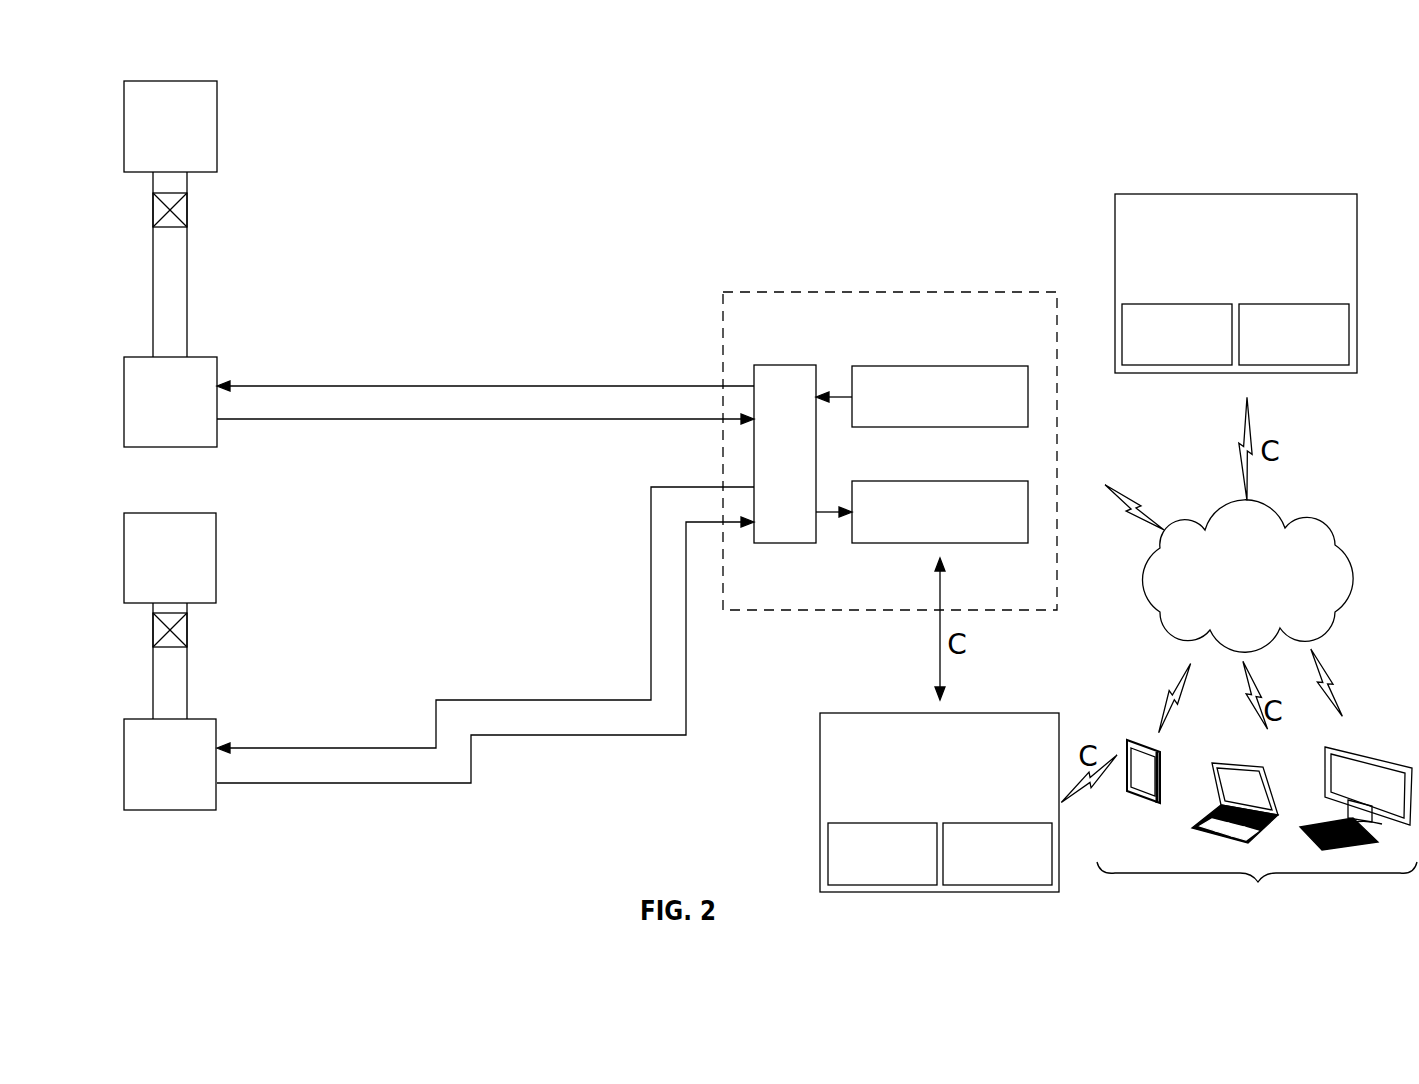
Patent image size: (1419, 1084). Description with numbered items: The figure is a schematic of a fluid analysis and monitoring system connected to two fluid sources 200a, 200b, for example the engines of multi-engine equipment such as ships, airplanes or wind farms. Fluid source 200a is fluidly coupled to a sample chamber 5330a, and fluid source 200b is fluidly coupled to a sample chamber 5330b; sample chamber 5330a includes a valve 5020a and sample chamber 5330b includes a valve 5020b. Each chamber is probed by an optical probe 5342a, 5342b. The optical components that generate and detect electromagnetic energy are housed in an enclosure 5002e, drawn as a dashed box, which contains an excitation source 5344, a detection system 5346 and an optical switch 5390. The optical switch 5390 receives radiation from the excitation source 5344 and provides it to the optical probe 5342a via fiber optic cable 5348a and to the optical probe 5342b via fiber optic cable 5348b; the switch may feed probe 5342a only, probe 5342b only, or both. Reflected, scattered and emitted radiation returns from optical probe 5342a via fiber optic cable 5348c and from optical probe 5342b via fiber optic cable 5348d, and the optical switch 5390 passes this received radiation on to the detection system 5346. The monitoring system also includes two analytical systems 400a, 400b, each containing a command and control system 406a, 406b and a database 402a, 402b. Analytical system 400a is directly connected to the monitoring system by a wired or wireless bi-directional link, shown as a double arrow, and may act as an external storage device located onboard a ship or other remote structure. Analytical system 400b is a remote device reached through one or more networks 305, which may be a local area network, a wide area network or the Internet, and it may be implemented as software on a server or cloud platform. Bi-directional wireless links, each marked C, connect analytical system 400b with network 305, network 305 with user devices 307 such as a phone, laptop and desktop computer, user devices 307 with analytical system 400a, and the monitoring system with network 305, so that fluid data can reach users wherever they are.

The fluid source 200a is at (217, 122).
The fluid source 200b is at (216, 556).
The valve 5020a is at (187, 210).
The valve 5020b is at (187, 630).
The sample chamber 5330a is at (187, 287).
The sample chamber 5330b is at (187, 690).
The optical probe 5342a is at (165, 447).
The optical probe 5342b is at (170, 810).
The fiber optic cable 5348a is at (430, 386).
The fiber optic cable 5348b is at (470, 700).
The fiber optic cable 5348c is at (495, 419).
The fiber optic cable 5348d is at (428, 783).
The enclosure 5002e is at (773, 291).
The optical switch 5390 is at (780, 543).
The excitation source 5344 is at (965, 366).
The detection system 5346 is at (990, 543).
The analytical system 400a is at (911, 784).
The command and control system 406a is at (854, 867).
The database 402a is at (969, 867).
The analytical system 400b is at (1210, 264).
The command and control system 406b is at (1149, 347).
The database 402b is at (1266, 347).
The network 305 is at (1221, 589).
The user devices 307 is at (1257, 828).